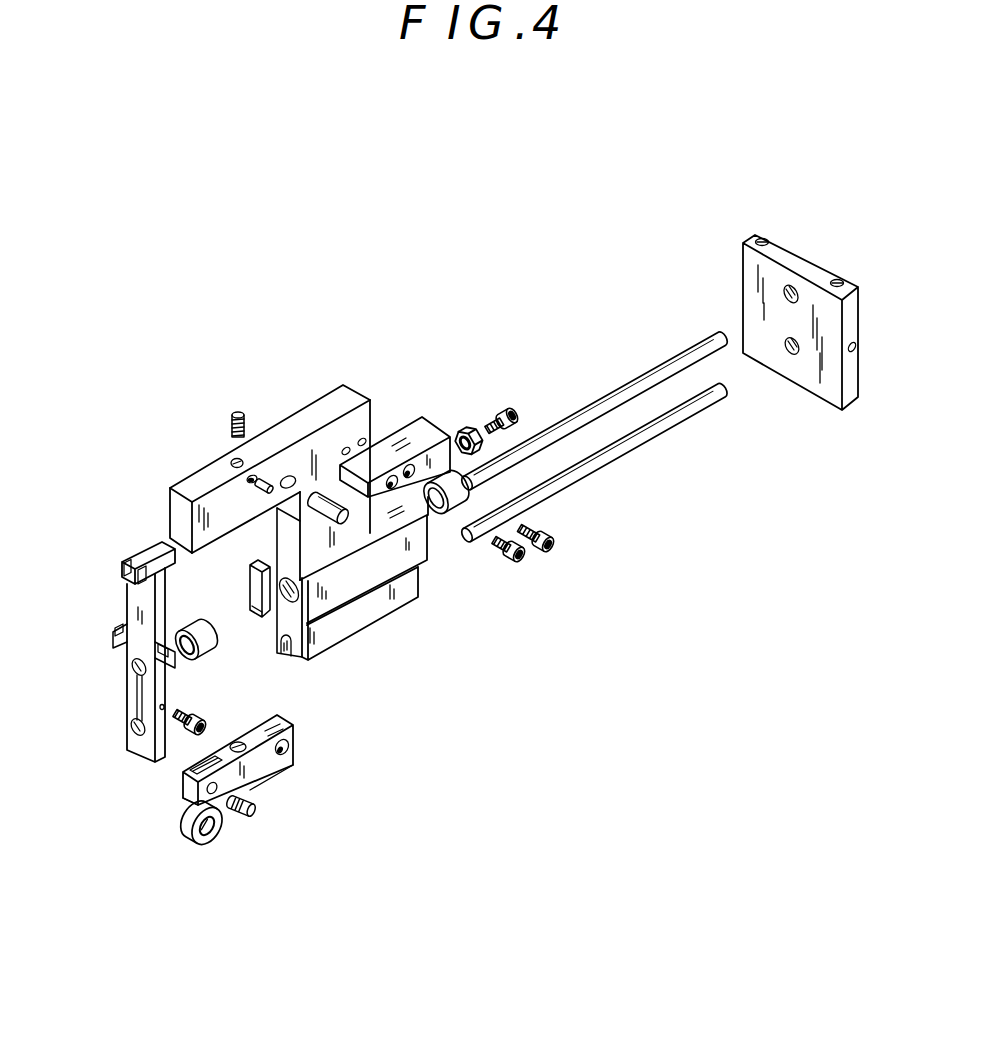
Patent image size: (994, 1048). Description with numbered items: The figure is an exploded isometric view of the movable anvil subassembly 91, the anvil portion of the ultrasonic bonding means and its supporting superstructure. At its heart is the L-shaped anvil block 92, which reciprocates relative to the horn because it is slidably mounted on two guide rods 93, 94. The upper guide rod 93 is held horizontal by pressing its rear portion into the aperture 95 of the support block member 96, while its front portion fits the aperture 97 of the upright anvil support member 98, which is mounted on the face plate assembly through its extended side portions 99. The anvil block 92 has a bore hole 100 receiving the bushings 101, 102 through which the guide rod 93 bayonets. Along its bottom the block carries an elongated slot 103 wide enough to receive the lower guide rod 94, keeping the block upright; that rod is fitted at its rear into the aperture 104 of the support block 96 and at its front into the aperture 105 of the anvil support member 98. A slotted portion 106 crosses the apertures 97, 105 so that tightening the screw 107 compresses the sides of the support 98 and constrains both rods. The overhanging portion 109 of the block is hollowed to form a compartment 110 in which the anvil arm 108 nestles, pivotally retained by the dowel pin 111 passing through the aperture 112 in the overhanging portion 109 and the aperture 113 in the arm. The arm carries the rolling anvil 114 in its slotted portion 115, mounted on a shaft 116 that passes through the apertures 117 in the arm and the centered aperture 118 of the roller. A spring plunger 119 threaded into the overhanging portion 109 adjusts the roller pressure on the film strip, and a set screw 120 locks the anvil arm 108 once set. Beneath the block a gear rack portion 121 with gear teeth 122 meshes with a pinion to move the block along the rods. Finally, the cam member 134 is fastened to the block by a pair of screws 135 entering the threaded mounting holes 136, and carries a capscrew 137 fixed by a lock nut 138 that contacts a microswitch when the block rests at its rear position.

The movable anvil subassembly 91 is at (251, 355).
The L-shaped anvil block 92 is at (344, 447).
The guide rod 93 is at (654, 371).
The guide rod 94 is at (657, 437).
The aperture 95 is at (789, 289).
The support block member 96 is at (742, 262).
The aperture 97 is at (132, 671).
The upright anvil support member 98 is at (133, 657).
The extended side portions 99 is at (112, 628).
The bore hole 100 is at (287, 603).
The bushing 101 is at (180, 639).
The bushing 102 is at (437, 516).
The elongated slot 103 is at (290, 660).
The aperture 104 is at (790, 354).
The aperture 105 is at (135, 735).
The slotted portion 106 is at (133, 690).
The screw 107 is at (192, 736).
The anvil arm 108 is at (295, 727).
The overhanging portion 109 is at (170, 512).
The compartment 110 is at (290, 505).
The dowel pin 111 is at (346, 523).
The aperture 112 is at (288, 476).
The aperture 113 is at (294, 767).
The rolling anvil 114 is at (187, 838).
The slotted portion 115 is at (190, 784).
The shaft 116 is at (252, 818).
The apertures 117 is at (218, 776).
The centered aperture 118 is at (212, 834).
The spring plunger 119 is at (228, 413).
The set screw 120 is at (258, 489).
The gear rack portion 121 is at (252, 581).
The gear teeth 122 is at (265, 613).
The cam member 134 is at (425, 420).
The screws 135 is at (544, 551).
The threaded mounting holes 136 is at (362, 440).
The capscrew 137 is at (512, 410).
The lock nut 138 is at (466, 428).